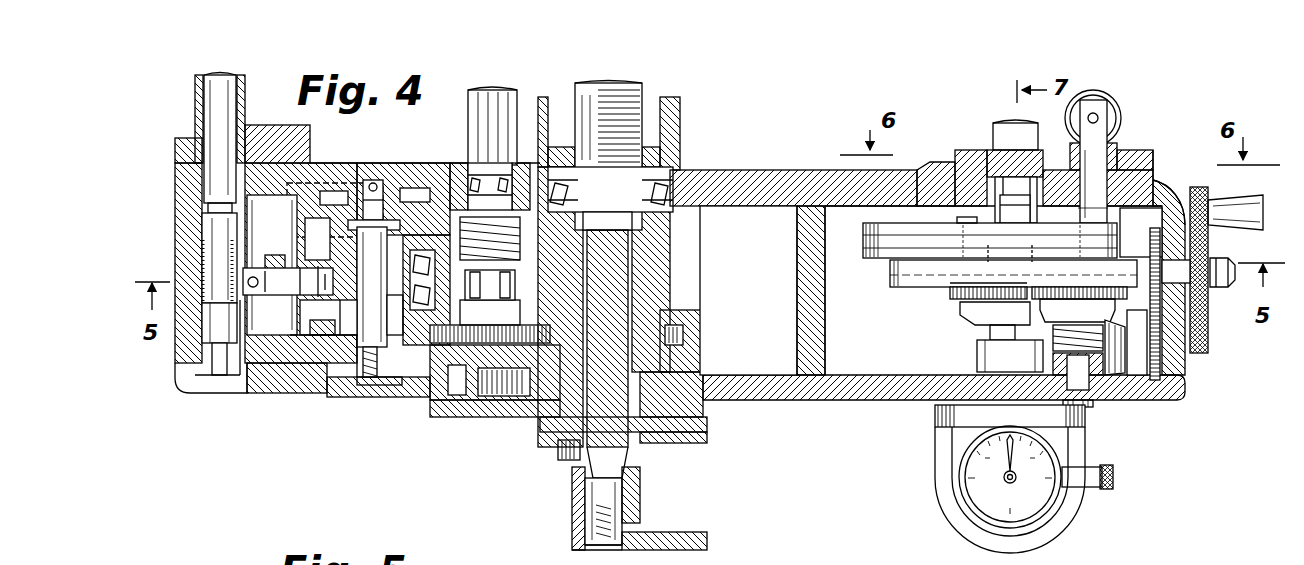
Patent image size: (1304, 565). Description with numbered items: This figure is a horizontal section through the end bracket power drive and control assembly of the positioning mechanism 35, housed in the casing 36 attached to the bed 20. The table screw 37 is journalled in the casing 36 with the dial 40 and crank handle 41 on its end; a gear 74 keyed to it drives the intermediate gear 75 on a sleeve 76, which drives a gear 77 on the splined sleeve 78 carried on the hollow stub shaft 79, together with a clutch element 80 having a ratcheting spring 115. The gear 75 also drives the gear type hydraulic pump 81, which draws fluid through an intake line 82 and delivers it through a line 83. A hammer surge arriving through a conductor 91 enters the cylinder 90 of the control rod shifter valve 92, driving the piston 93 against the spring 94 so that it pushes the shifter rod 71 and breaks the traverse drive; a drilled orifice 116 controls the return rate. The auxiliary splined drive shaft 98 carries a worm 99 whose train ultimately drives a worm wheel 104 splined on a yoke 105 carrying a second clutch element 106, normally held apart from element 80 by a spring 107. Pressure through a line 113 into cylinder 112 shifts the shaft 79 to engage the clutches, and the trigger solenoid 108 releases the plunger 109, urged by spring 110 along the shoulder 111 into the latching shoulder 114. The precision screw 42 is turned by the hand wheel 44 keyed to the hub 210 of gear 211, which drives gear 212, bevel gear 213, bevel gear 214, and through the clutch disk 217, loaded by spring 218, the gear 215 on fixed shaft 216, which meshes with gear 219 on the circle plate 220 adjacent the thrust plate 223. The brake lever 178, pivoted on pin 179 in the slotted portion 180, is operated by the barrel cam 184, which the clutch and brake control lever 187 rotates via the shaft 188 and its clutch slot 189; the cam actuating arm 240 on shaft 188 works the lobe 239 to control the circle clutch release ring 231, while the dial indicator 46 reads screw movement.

The bed 20 is at (277, 127).
The positioning mechanism 35 is at (322, 157).
The casing 36 is at (793, 401).
The table screw 37 is at (643, 88).
The dial mechanism 40 is at (690, 434).
The crank handle 41 is at (640, 513).
The precision screw 42 is at (1012, 123).
The hand wheel 44 is at (1208, 341).
The dial indicator 46 is at (977, 486).
The shifter rod 71 is at (232, 92).
The gear 74 is at (683, 334).
The intermediate gear 75 is at (515, 335).
The sleeve 76 is at (480, 396).
The gear 77 is at (327, 340).
The splined sleeve 78 is at (383, 315).
The hollow stub shaft 79 is at (360, 370).
The clutch element 80 is at (328, 317).
The gear type hydraulic pump 81 is at (452, 395).
The intake line 82 is at (427, 400).
The line 83 is at (558, 428).
The cylinder 90 is at (207, 347).
The conductor 91 is at (243, 370).
The control rod shifter valve 92 is at (168, 213).
The piston 93 is at (207, 328).
The spring 94 is at (200, 243).
The auxiliary splined drive shaft 98 is at (483, 113).
The worm 99 is at (520, 251).
The worm wheel 104 is at (414, 196).
The yoke 105 is at (333, 199).
The second clutch element 106 is at (441, 275).
The spring 107 is at (368, 397).
The trigger solenoid 108 is at (270, 265).
The plunger 109 is at (314, 237).
The spring 110 is at (288, 281).
The shoulder 111 is at (372, 287).
The cylinder 112 is at (374, 180).
The line 113 is at (330, 162).
The latching shoulder 114 is at (435, 264).
The ratcheting spring 115 is at (470, 330).
The drilled orifice 116 is at (202, 372).
The brake lever 178 is at (1110, 250).
The pin 179 is at (952, 250).
The slotted portion 180 is at (880, 242).
The barrel cam 184 is at (1162, 185).
The clutch and brake control lever 187 is at (1112, 100).
The shaft 188 is at (1105, 118).
The clutch slot 189 is at (1122, 162).
The hub 210 is at (1188, 264).
The gear 211 is at (1150, 264).
The gear 212 is at (1185, 371).
The bevel gear 213 is at (1122, 375).
The bevel gear 214 is at (995, 313).
The gear 215 is at (1030, 292).
The shaft 216 is at (1078, 393).
The clutch disk 217 is at (1090, 304).
The spring 218 is at (1055, 343).
The gear 219 is at (952, 292).
The circle plate 220 is at (895, 275).
The thrust plate 223 is at (975, 328).
The circle clutch release ring 231 is at (960, 152).
The lobe 239 is at (1000, 128).
The cam actuating arm 240 is at (1040, 162).